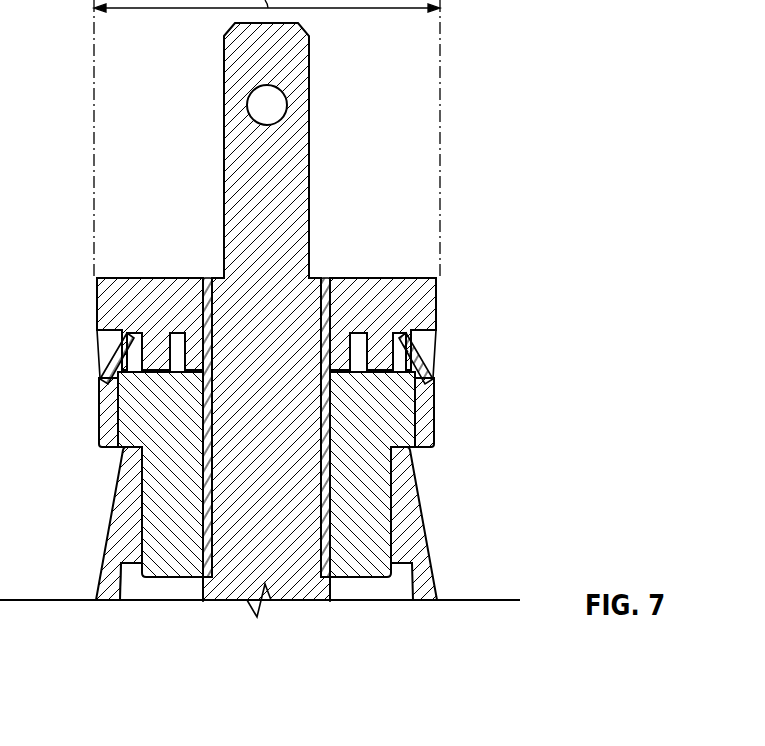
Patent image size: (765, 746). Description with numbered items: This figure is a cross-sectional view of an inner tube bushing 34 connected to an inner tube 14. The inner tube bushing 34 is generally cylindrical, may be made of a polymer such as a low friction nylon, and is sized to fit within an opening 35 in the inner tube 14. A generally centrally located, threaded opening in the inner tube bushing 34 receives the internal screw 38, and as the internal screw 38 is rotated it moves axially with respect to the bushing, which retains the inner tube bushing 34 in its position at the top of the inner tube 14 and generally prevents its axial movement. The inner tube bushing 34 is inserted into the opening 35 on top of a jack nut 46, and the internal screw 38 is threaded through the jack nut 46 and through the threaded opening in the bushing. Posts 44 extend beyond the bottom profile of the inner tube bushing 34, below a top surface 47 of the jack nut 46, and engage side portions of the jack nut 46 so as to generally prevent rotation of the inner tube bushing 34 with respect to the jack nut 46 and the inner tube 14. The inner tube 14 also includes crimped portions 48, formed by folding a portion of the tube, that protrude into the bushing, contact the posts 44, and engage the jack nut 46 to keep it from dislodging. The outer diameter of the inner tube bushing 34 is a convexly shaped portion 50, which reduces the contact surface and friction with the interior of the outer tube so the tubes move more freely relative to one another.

The inner tube 14 is at (420, 548).
The inner tube bushing 34 is at (433, 305).
The opening 35 is at (133, 585).
The internal screw 38 is at (245, 600).
The posts 44 is at (155, 353).
The jack nut 46 is at (142, 405).
The top surface 47 is at (403, 348).
The crimped portions 48 is at (203, 268).
The convexly shaped portion 50 is at (263, 362).